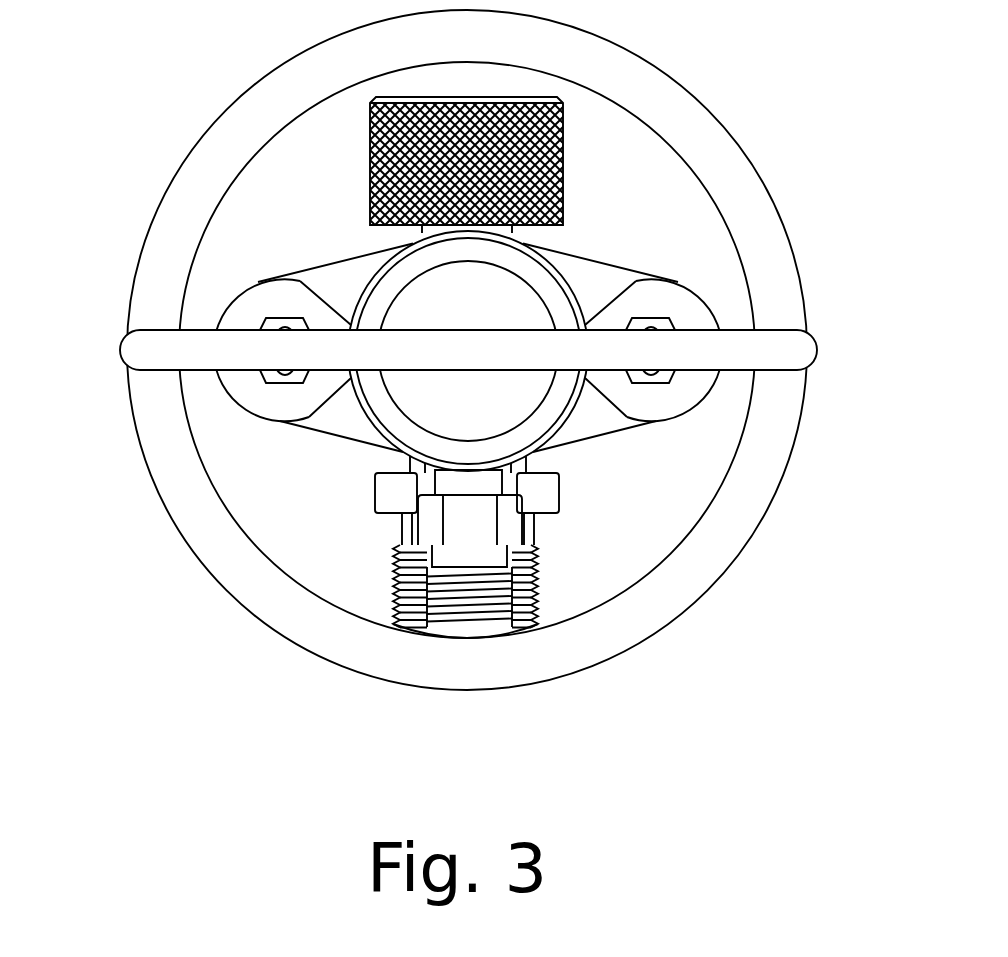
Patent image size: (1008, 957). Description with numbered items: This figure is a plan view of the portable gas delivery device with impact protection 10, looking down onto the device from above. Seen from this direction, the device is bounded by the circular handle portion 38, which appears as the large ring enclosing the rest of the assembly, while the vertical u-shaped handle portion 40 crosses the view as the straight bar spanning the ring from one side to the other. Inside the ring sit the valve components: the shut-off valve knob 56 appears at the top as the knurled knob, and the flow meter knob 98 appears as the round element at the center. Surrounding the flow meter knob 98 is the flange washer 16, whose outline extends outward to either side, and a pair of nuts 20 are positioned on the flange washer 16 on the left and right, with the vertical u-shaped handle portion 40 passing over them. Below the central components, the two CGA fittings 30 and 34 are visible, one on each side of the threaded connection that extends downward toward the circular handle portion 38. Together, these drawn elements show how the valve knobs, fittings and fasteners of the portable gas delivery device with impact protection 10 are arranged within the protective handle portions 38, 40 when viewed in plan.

The portable gas delivery device with impact protection 10 is at (148, 672).
The flange washer 16 is at (584, 258).
The nuts 20 is at (288, 330).
The CGA fitting 30 is at (389, 515).
The CGA fitting 34 is at (527, 528).
The circular handle portion 38 is at (740, 550).
The vertical u-shaped handle portion 40 is at (773, 330).
The shut-off valve knob 56 is at (565, 155).
The flow meter knob 98 is at (468, 351).